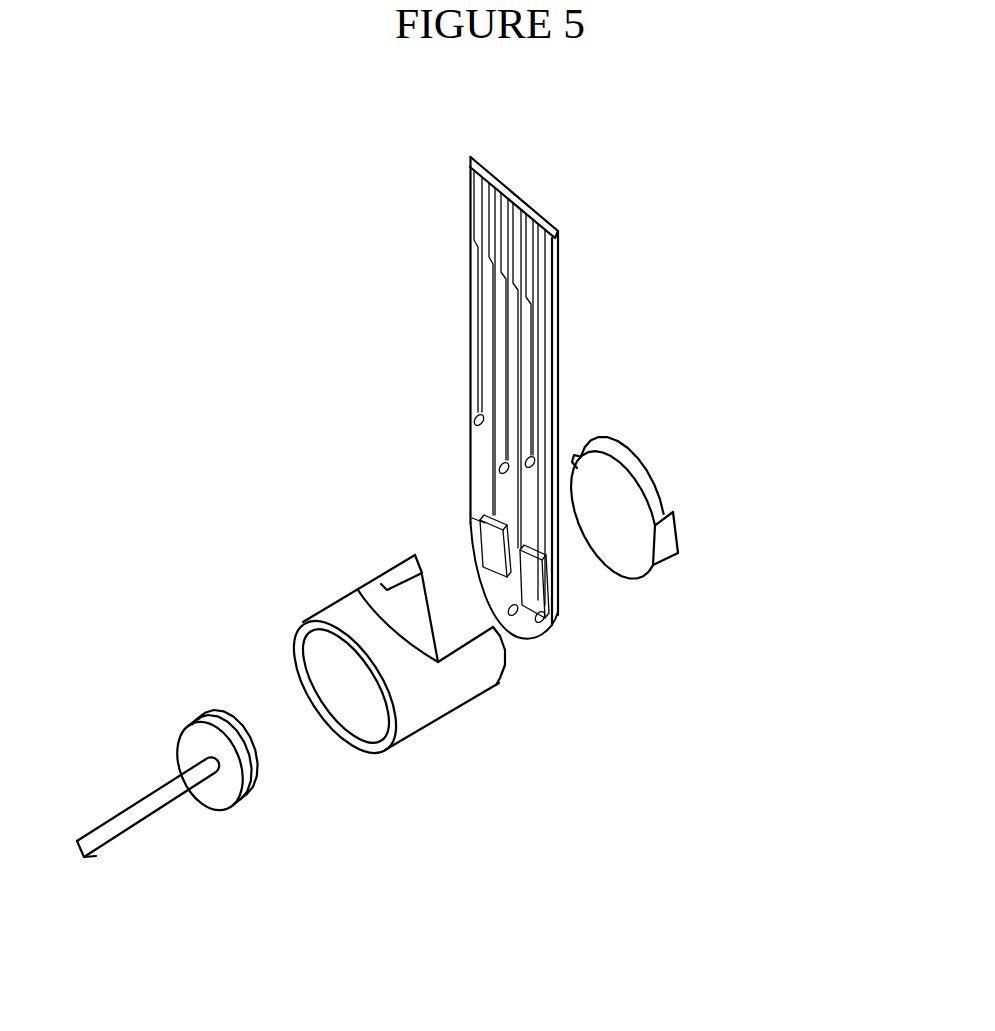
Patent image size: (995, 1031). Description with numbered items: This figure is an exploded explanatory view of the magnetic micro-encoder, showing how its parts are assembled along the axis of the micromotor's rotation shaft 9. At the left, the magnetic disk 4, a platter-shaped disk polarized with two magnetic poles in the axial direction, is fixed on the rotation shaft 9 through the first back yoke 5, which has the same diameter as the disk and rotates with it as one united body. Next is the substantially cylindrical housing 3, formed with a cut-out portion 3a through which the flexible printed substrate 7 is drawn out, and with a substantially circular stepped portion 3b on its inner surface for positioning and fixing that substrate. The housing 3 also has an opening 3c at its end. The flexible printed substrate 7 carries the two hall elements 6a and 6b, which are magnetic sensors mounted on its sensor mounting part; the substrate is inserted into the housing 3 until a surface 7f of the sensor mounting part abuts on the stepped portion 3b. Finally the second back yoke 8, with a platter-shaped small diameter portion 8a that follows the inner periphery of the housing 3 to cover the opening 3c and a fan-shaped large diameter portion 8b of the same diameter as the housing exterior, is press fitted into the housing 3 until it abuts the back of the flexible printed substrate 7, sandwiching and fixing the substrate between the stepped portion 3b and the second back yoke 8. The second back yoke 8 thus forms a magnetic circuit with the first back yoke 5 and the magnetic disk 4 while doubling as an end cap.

The housing 3 is at (345, 617).
The cut-out portion 3a is at (377, 577).
The stepped portion 3b is at (423, 580).
The opening 3c is at (470, 606).
The magnetic disk 4 is at (204, 755).
The first back yoke 5 is at (233, 797).
The hall element 6a is at (473, 518).
The hall element 6b is at (540, 588).
The flexible printed substrate 7 is at (471, 378).
The surface of the sensor mounting part 7f is at (540, 633).
The second back yoke 8 is at (724, 419).
The small diameter portion 8a is at (670, 545).
The large diameter portion 8b is at (628, 477).
The rotation shaft 9 is at (135, 817).